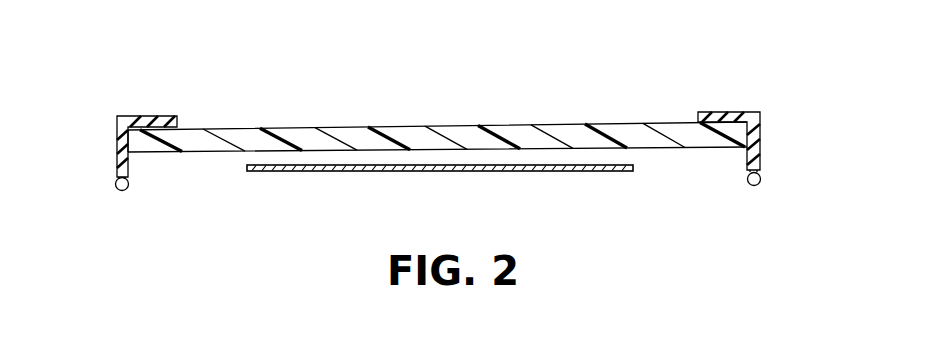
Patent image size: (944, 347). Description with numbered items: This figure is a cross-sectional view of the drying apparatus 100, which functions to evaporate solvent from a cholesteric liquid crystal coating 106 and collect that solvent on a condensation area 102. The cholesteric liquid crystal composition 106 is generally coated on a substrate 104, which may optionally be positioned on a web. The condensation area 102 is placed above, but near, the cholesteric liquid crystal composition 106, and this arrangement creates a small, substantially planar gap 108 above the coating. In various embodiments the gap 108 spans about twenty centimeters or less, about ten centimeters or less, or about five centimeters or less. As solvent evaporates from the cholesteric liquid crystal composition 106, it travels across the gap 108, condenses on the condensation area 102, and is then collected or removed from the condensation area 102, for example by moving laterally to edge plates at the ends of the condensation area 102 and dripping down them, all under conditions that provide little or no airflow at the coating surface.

The apparatus 100 is at (655, 97).
The condensation area 102 is at (514, 131).
The substrate 104 is at (305, 173).
The cholesteric liquid crystal coating 106 is at (545, 161).
The gap 108 is at (328, 160).